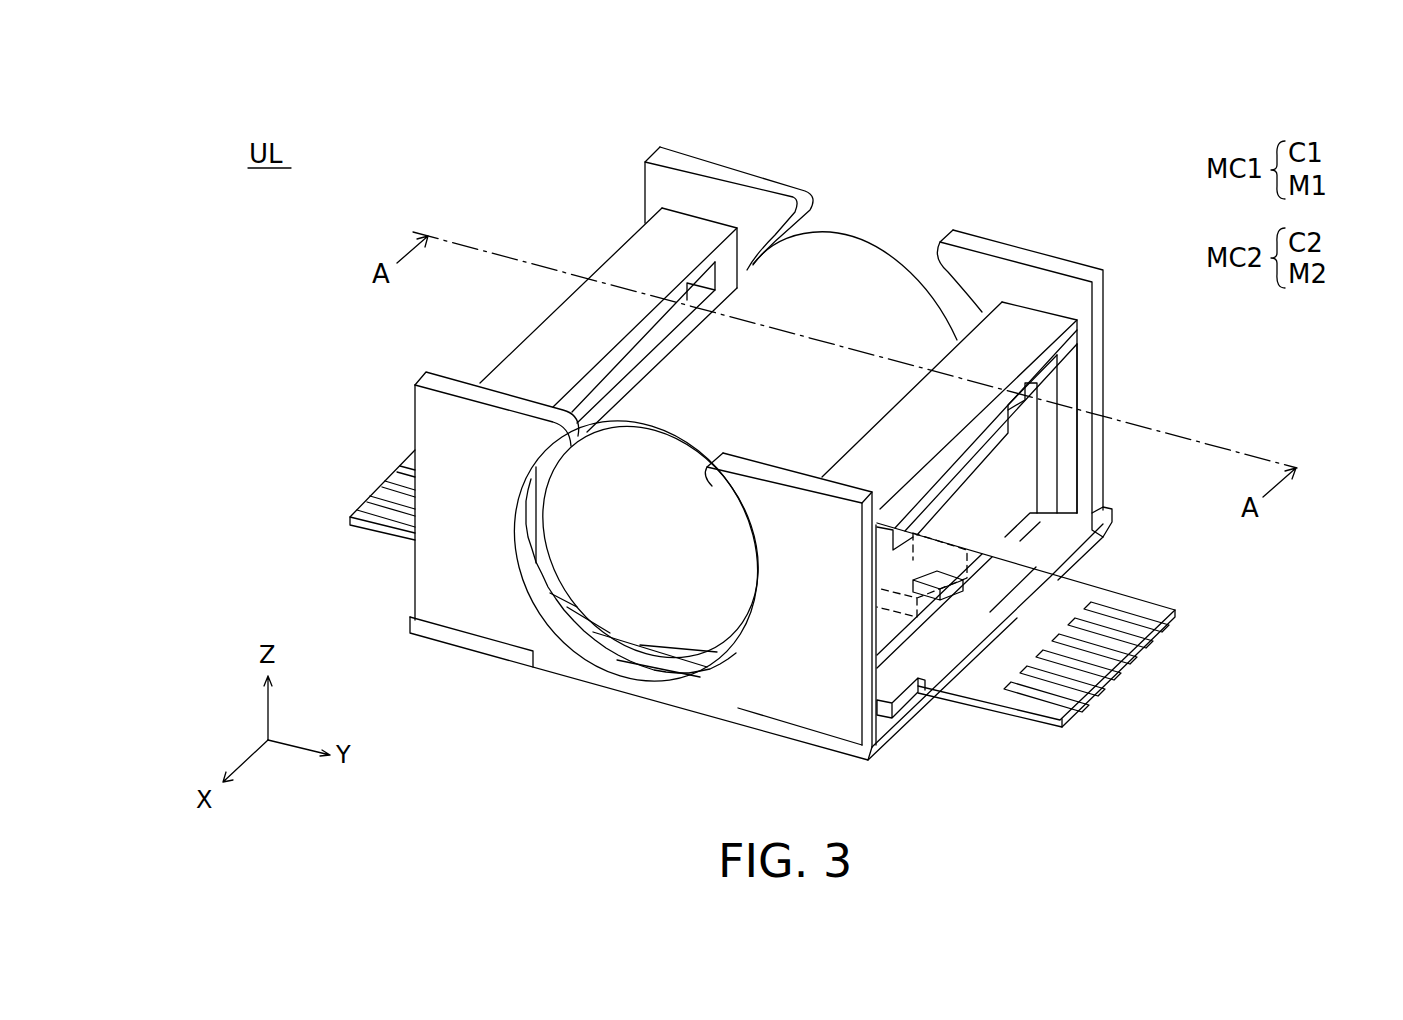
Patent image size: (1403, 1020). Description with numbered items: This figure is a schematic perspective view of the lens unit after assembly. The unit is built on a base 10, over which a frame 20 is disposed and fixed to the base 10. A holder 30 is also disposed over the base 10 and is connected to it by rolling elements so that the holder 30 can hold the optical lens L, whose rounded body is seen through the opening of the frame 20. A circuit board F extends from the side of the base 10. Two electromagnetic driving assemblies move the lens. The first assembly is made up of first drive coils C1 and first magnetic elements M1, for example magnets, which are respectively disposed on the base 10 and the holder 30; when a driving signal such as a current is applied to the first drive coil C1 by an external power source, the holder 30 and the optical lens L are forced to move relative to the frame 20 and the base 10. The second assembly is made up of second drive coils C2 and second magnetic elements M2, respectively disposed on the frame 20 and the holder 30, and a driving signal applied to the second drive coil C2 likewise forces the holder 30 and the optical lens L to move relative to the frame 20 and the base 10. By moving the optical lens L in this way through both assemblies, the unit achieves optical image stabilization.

The base 10 is at (477, 647).
The frame 20 is at (440, 572).
The holder 30 is at (985, 523).
The optical lens L is at (838, 285).
The circuit board F is at (1112, 652).
The first drive coil C1 is at (957, 602).
The first magnetic element M1 is at (877, 600).
The second drive coil C2 is at (1008, 407).
The second magnetic element M2 is at (973, 460).